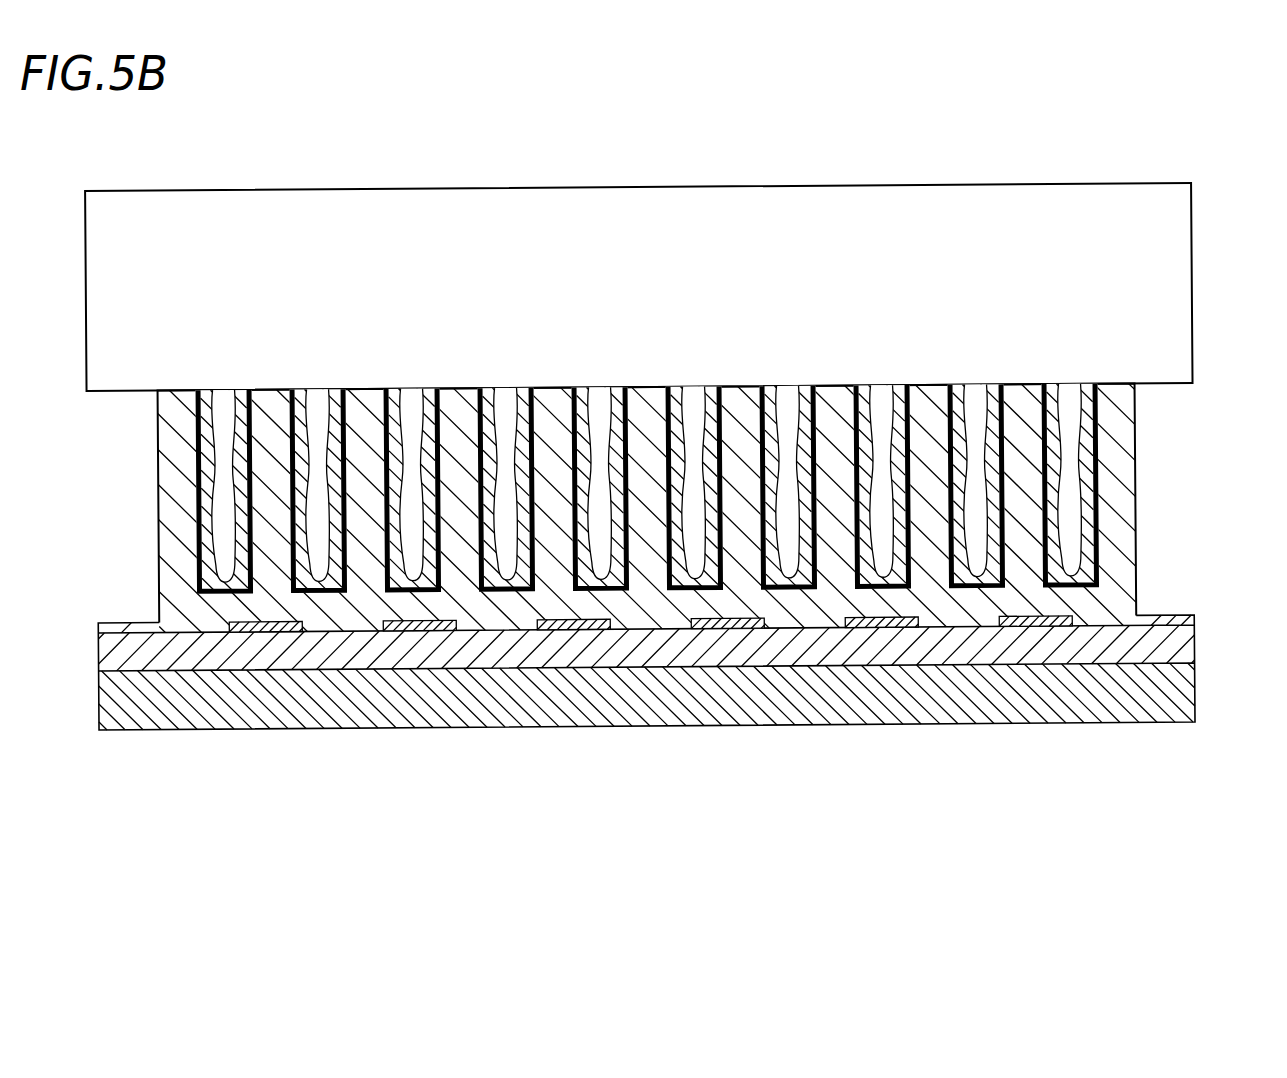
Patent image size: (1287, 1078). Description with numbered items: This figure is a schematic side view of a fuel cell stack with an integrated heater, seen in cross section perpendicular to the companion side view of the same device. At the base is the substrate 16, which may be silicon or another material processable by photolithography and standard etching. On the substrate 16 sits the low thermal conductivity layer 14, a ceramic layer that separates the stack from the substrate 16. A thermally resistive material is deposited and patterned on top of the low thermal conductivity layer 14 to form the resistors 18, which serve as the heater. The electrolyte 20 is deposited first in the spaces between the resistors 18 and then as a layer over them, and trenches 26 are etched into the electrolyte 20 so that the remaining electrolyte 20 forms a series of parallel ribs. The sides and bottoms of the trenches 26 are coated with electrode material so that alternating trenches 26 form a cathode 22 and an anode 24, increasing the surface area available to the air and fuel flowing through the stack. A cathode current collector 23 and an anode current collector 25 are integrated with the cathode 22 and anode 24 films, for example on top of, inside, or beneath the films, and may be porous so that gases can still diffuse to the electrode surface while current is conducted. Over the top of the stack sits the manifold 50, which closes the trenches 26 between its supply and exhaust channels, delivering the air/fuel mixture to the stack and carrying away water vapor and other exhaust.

The low thermal conductivity layer 14 is at (1188, 647).
The substrate 16 is at (1188, 703).
The resistors 18 is at (318, 631).
The electrolyte 20 is at (1110, 495).
The cathode 22 is at (965, 390).
The cathode current collector 23 is at (943, 384).
The anode 24 is at (1059, 390).
The anode current collector 25 is at (1037, 384).
The trenches 26 is at (413, 402).
The manifold 50 is at (1194, 236).